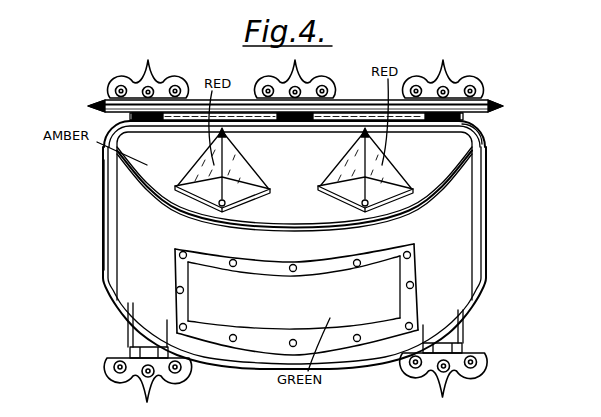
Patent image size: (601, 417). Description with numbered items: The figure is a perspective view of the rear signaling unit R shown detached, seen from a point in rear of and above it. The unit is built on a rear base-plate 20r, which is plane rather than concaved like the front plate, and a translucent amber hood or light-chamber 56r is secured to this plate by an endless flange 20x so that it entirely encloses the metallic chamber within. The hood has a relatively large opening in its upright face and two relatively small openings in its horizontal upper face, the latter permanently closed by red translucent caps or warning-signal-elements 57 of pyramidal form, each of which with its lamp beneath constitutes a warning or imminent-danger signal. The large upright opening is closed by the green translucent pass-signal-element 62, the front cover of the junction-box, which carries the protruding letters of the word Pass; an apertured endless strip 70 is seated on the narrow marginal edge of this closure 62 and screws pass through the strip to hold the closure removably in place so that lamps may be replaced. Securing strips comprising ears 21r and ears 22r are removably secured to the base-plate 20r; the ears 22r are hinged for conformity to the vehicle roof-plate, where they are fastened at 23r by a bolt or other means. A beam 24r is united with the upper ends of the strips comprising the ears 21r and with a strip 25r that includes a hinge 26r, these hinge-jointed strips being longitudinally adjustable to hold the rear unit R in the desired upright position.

The rear signaling unit R is at (103, 226).
The rear base-plate 20r is at (113, 251).
The endless flange 20x is at (107, 270).
The ears 21r is at (145, 79).
The ears 22r is at (185, 371).
The securing point 23r is at (452, 393).
The beam 24r is at (380, 97).
The strip 25r is at (290, 80).
The hinge 26r is at (286, 118).
The translucent hood or light-chamber 56r is at (470, 138).
The translucent caps or warning-signal-elements 57 is at (352, 158).
The pass-signal-element 62 is at (190, 310).
The apertured endless strip 70 is at (180, 265).